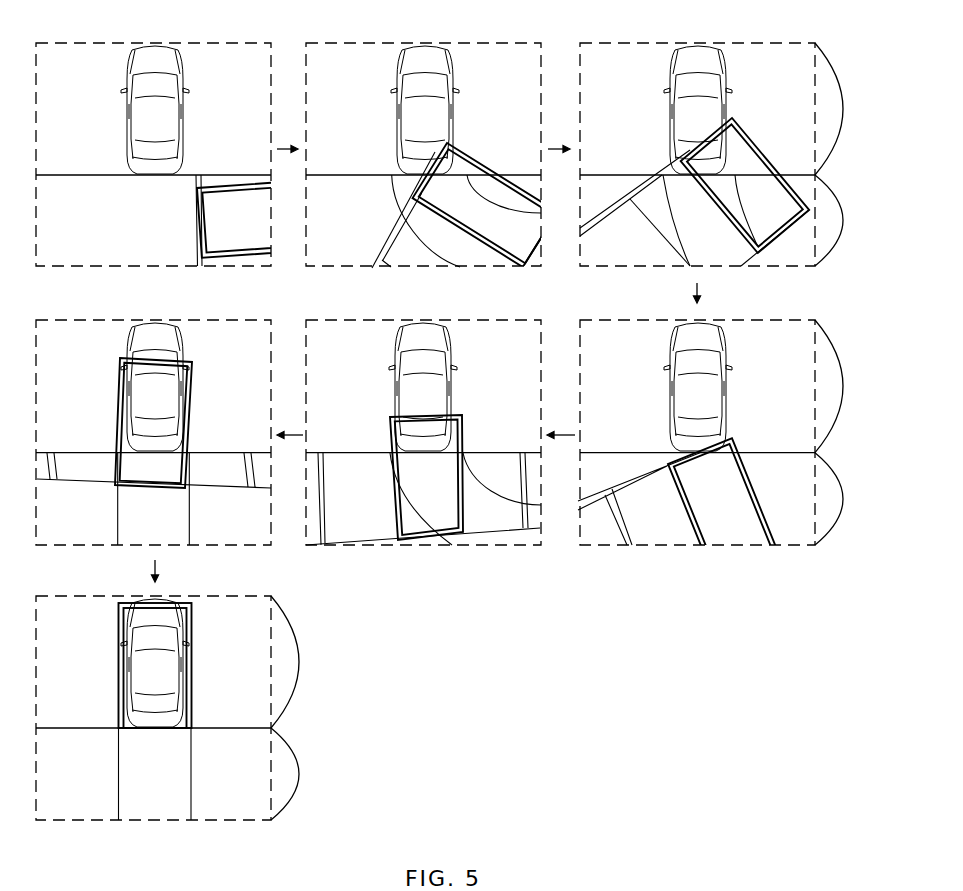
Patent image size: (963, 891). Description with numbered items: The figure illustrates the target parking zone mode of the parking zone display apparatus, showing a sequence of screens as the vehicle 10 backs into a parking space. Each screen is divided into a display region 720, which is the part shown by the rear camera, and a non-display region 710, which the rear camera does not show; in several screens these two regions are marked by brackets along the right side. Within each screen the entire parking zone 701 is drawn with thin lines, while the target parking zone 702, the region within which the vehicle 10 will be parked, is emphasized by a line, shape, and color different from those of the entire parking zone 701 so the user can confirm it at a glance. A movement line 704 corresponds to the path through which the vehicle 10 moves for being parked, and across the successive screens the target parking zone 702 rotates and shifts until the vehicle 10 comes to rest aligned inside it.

The vehicle 10 is at (155, 46).
The entire parking zone 701 is at (199, 263).
The target parking zone 702 is at (236, 187).
The movement line 704 is at (405, 240).
The non-display region 710 is at (567, 385).
The display region 720 is at (567, 497).